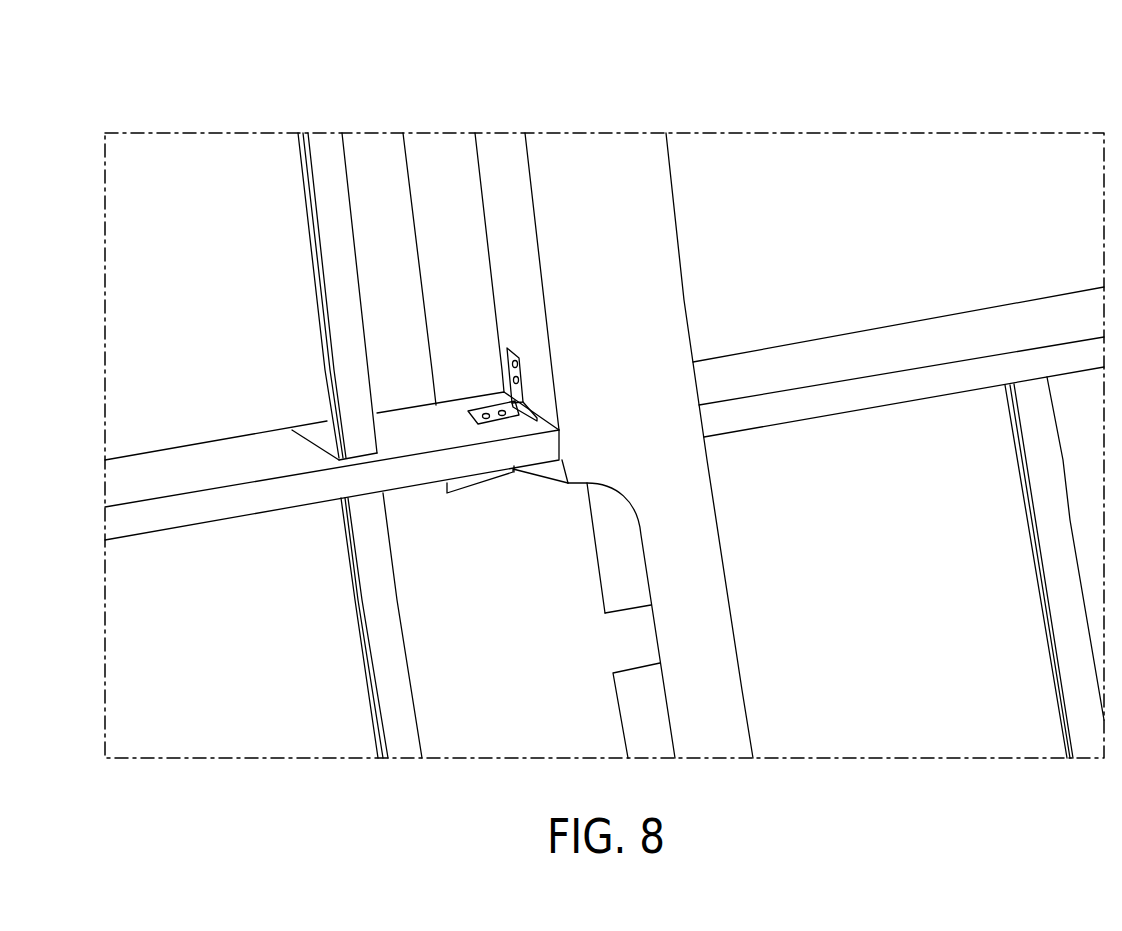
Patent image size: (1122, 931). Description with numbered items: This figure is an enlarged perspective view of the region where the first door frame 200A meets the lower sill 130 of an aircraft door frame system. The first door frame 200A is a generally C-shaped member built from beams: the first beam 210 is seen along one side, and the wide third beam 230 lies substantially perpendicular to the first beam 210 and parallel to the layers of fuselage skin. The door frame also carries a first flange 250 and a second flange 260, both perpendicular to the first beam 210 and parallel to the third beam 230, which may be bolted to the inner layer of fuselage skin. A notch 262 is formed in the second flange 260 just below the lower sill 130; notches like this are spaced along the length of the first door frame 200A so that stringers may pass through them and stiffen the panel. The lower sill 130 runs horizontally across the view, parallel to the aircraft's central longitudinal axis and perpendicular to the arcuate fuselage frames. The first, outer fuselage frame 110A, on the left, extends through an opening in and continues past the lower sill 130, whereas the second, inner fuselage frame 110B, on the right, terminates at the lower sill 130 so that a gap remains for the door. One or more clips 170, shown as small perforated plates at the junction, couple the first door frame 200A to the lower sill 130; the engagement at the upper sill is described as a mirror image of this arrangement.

The first, outer fuselage frame 110A is at (342, 292).
The second, inner fuselage frame 110B is at (1060, 612).
The lower sill 130 is at (973, 328).
The clip 170 is at (520, 390).
The first door frame 200A is at (592, 405).
The first beam 210 is at (502, 178).
The third beam 230 is at (633, 305).
The first flange 250 is at (479, 308).
The second flange 260 is at (610, 533).
The notch 262 is at (632, 645).